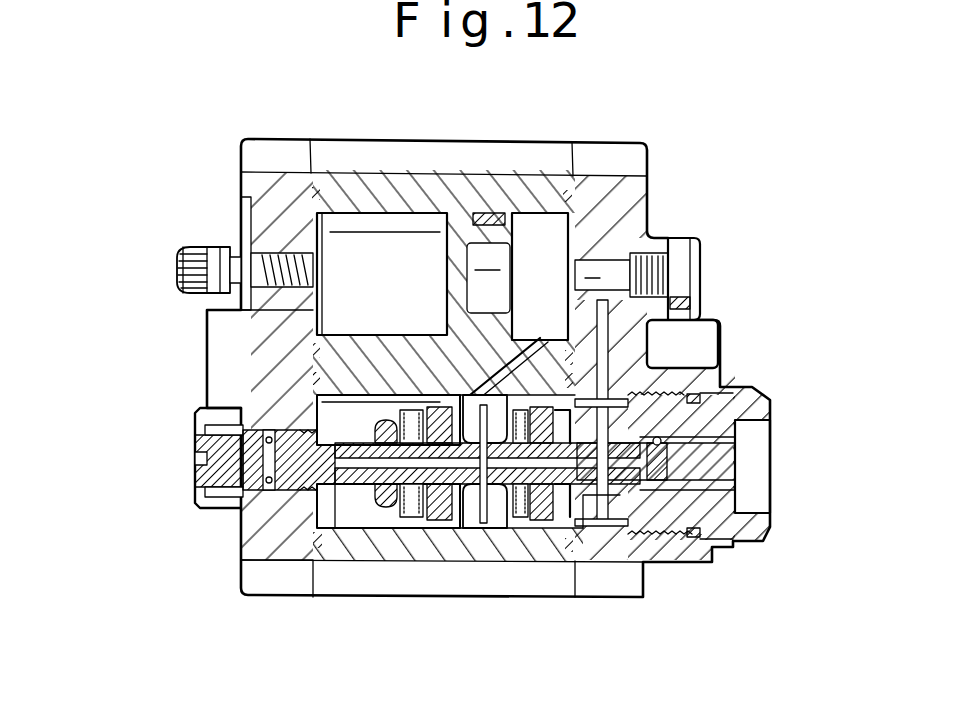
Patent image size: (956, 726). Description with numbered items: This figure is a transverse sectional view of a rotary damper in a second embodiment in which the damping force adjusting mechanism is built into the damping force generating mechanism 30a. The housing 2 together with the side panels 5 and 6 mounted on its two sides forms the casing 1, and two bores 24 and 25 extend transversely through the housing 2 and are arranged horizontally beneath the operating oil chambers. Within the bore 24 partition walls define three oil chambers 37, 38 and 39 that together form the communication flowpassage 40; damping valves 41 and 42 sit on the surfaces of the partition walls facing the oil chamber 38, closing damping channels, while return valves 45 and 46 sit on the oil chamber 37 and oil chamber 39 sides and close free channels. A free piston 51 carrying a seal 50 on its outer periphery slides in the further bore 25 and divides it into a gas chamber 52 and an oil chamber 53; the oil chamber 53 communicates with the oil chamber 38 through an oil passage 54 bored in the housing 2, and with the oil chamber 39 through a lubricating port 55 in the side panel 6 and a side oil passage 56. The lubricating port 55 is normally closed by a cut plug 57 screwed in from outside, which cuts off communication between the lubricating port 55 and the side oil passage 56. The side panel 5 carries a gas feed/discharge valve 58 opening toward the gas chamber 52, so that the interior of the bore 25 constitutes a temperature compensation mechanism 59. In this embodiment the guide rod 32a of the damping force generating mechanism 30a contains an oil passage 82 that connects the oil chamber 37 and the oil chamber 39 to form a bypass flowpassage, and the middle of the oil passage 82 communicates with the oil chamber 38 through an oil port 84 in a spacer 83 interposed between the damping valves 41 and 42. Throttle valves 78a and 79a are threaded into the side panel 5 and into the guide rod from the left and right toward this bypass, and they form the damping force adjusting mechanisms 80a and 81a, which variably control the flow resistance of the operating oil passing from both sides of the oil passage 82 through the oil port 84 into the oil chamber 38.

The casing 1 is at (650, 138).
The housing 2 is at (423, 150).
The side panel 5 is at (268, 532).
The side panel 6 is at (637, 192).
The bore 24 is at (308, 590).
The bore 25 is at (350, 212).
The damping force generating mechanism 30a is at (775, 527).
The guide rod 32a is at (385, 445).
The oil chamber 37 is at (388, 525).
The oil chamber 38 is at (476, 398).
The oil chamber 39 is at (654, 372).
The communication flowpassage 40 is at (327, 437).
The damping valve 41 is at (448, 398).
The damping valve 42 is at (520, 525).
The return valve 45 is at (422, 522).
The return valve 46 is at (515, 405).
The seal 50 is at (490, 212).
The free piston 51 is at (447, 327).
The gas chamber 52 is at (362, 278).
The oil chamber 53 is at (523, 273).
The oil passage 54 is at (538, 338).
The lubricating port 55 is at (622, 250).
The side oil passage 56 is at (705, 303).
The cut plug 57 is at (700, 252).
The gas feed/discharge valve 58 is at (180, 270).
The temperature compensation mechanism 59 is at (300, 316).
The throttle valve 78a is at (341, 515).
The throttle valve 79a is at (578, 512).
The damping force adjusting mechanism 80a is at (186, 467).
The damping force adjusting mechanism 81a is at (750, 450).
The oil passage 82 is at (375, 522).
The spacer 83 is at (455, 522).
The oil port 84 is at (490, 530).